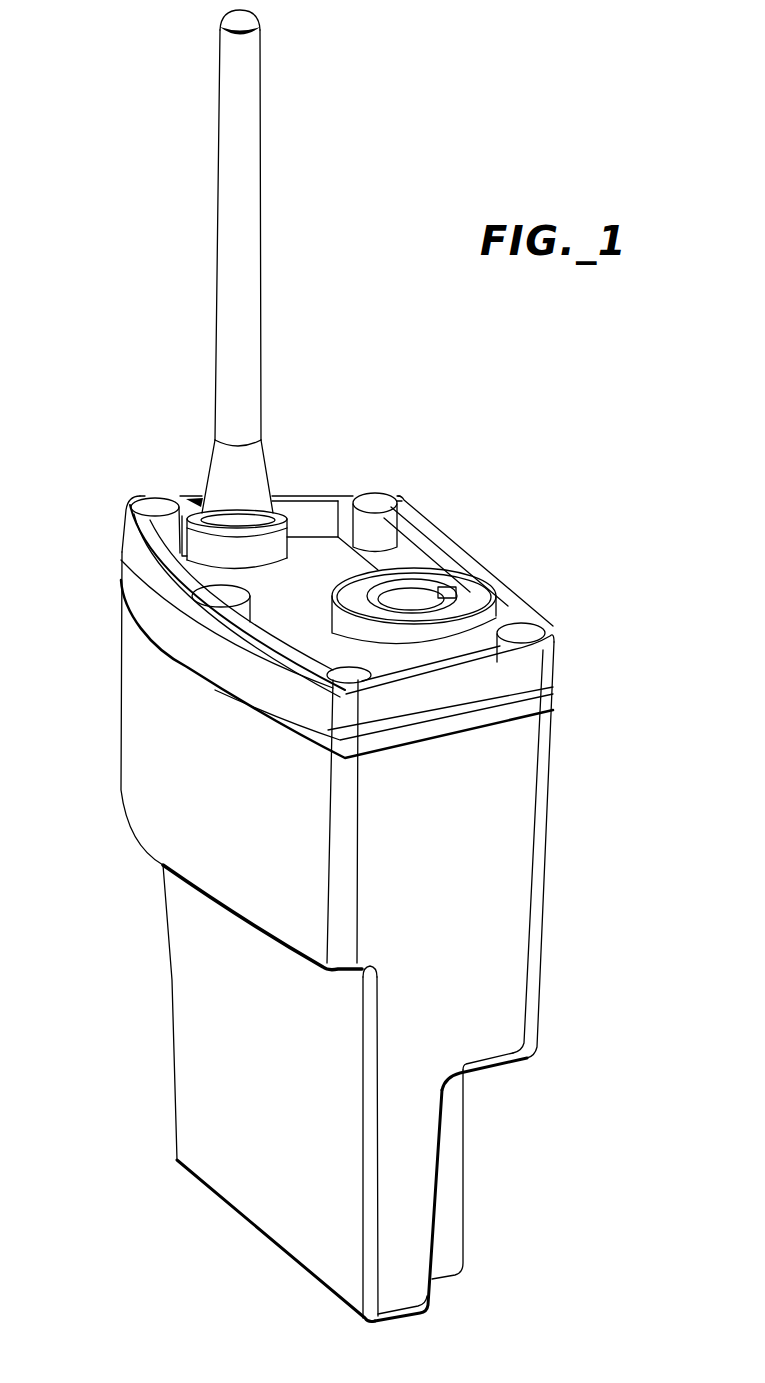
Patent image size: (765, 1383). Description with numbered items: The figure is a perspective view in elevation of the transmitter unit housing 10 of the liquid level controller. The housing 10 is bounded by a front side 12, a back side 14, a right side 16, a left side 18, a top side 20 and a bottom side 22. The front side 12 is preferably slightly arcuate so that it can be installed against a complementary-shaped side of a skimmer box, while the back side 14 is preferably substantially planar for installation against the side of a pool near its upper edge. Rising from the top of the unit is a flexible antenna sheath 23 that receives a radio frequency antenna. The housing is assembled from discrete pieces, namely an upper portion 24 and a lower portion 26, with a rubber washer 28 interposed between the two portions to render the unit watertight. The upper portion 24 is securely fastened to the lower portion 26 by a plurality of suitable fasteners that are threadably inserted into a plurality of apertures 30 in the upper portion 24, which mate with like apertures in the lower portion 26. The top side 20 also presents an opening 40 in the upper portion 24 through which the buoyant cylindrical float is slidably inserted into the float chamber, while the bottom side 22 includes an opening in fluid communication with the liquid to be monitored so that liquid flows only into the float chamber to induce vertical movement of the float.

The housing 10 is at (505, 383).
The front side 12 is at (130, 708).
The back side 14 is at (560, 865).
The right side 16 is at (513, 1015).
The left side 18 is at (114, 630).
The top side 20 is at (306, 560).
The bottom side 22 is at (258, 1245).
The flexible antenna sheath 23 is at (247, 245).
The upper portion 24 is at (528, 670).
The lower portion 26 is at (178, 992).
The rubber washer 28 is at (515, 713).
The apertures 30 is at (157, 503).
The opening 40 is at (448, 575).